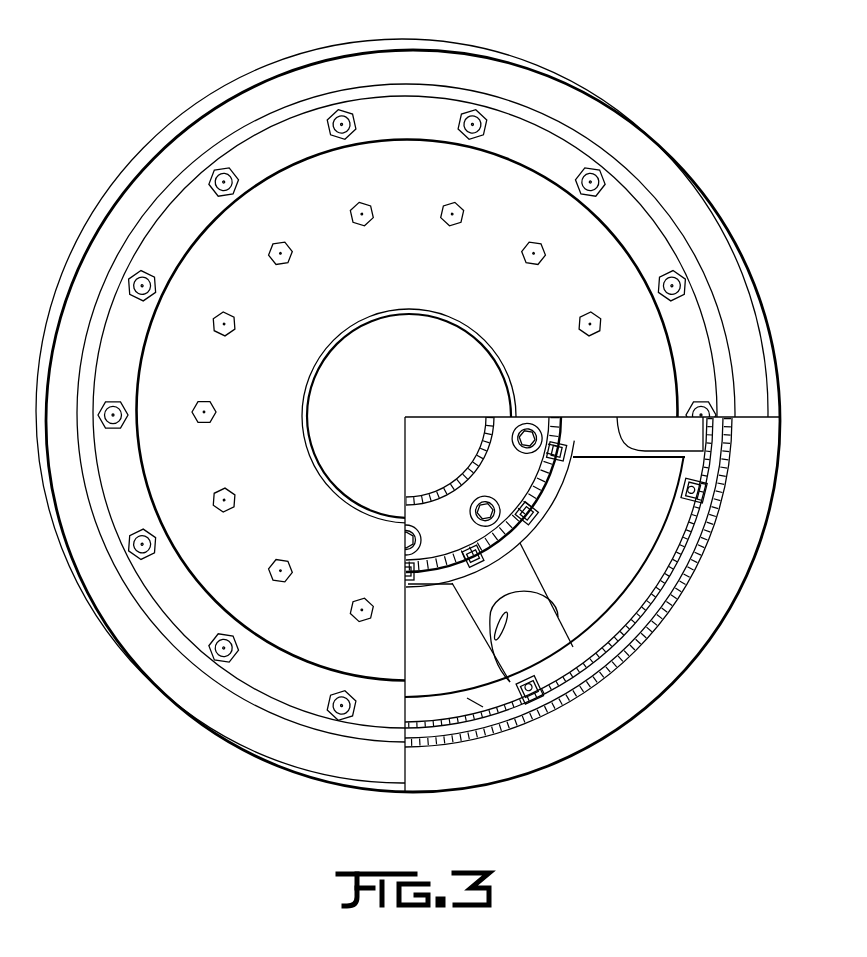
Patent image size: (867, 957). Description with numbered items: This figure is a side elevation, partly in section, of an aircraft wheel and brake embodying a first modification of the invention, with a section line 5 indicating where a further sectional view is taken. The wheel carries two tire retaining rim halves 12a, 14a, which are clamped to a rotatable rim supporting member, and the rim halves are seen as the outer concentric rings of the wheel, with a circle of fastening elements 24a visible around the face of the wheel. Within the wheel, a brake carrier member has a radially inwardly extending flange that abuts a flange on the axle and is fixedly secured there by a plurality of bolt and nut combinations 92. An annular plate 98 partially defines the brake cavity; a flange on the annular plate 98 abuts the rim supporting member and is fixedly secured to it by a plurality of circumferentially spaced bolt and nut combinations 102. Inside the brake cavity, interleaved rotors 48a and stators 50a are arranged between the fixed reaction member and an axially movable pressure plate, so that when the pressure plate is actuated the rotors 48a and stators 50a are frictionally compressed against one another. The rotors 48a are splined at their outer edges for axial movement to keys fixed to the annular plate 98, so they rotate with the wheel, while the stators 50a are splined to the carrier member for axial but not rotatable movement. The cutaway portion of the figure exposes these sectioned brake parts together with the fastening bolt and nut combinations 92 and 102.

The section line 5- 5 is at (348, 18).
The tire retaining rim half 12a is at (567, 621).
The tire retaining rim half 14a is at (668, 152).
The lug nut 24a is at (473, 132).
The rotor 48a is at (589, 676).
The stator 50a is at (618, 570).
The bolt and nut combination 92 is at (531, 424).
The annular plate 98 is at (618, 642).
The bolt and nut combination 102 is at (452, 230).